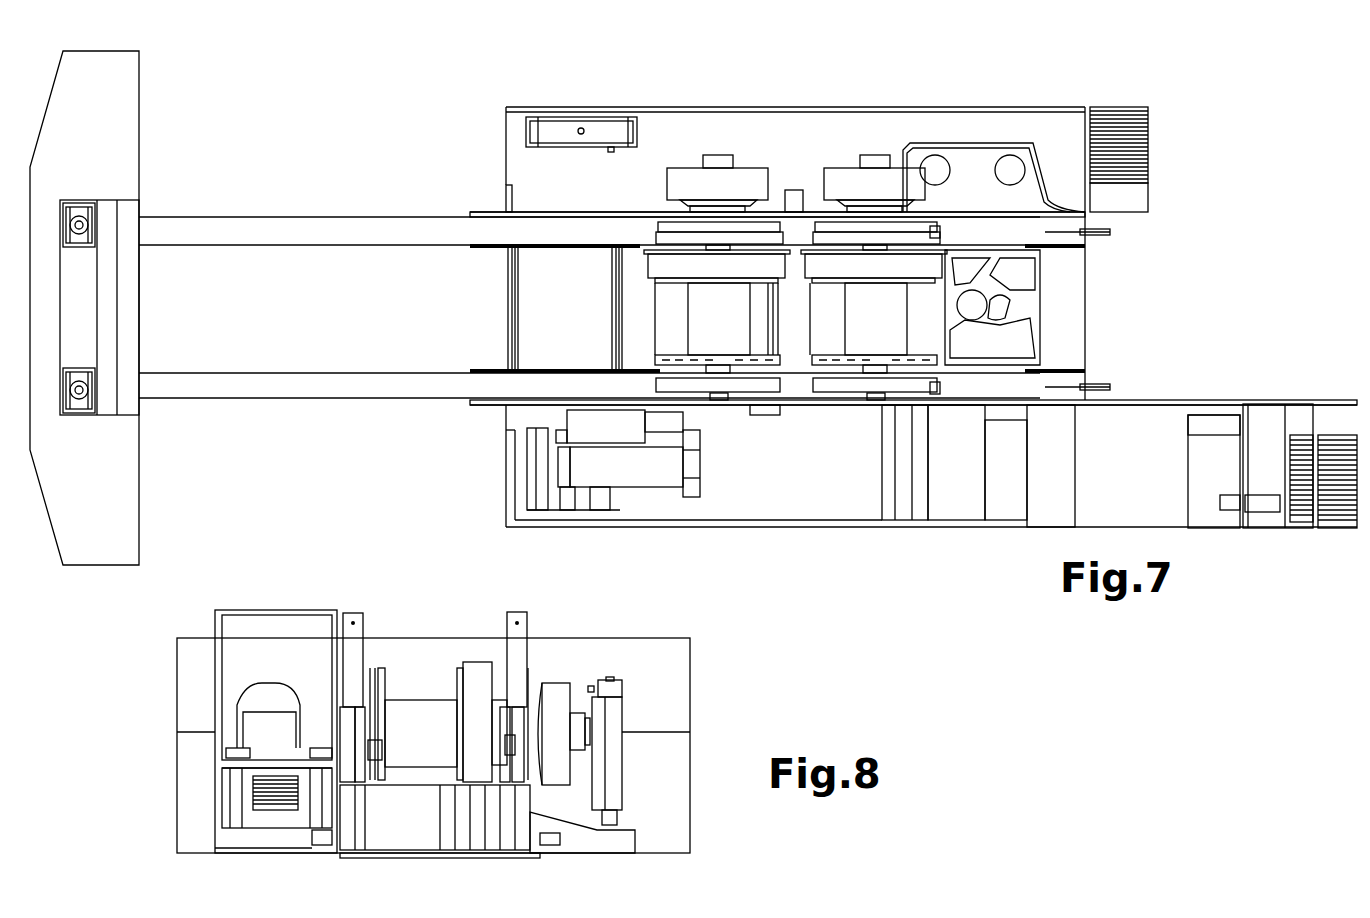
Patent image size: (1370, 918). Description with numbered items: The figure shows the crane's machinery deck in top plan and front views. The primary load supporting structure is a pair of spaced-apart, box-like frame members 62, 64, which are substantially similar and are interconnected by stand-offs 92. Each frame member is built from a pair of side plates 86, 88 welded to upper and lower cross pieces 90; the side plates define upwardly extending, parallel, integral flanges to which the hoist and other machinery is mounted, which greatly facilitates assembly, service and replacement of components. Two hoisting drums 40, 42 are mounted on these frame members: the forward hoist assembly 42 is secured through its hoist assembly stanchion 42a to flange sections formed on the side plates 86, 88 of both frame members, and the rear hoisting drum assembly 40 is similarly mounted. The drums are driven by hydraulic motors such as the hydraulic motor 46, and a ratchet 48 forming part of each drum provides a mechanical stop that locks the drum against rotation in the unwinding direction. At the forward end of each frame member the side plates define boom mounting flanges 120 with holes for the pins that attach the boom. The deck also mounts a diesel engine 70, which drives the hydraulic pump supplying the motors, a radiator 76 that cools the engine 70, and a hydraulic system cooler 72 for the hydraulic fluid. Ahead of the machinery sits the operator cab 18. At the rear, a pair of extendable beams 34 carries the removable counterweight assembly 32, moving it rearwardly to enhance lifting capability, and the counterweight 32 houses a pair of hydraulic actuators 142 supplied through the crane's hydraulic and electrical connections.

In FIG. 7, the operator cab 18 is at (1247, 385).
In FIG. 8, the operator cab 18 is at (258, 600).
In FIG. 7, the counterweight assembly 32 is at (125, 95).
In FIG. 8, the counterweight assembly 32 is at (678, 688).
In FIG. 7, the extendable beams 34 is at (285, 232).
In FIG. 7, the rear hoisting drum assembly 40 is at (710, 125).
In FIG. 7, the forward hoist assembly 42 is at (862, 130).
In FIG. 8, the forward hoist assembly 42 is at (422, 670).
In FIG. 7, the hoist assembly stanchion 42a is at (940, 235).
In FIG. 8, the hoist assembly stanchion 42a is at (380, 757).
In FIG. 8, the hydraulic motor 46 is at (557, 693).
In FIG. 7, the ratchet 48 is at (660, 358).
In FIG. 8, the ratchet 48 is at (378, 680).
In FIG. 7, the frame member 62 is at (537, 365).
In FIG. 7, the frame member 64 is at (555, 205).
In FIG. 7, the diesel engine 70 is at (648, 472).
In FIG. 7, the hydraulic system cooler 72 is at (963, 495).
In FIG. 7, the radiator 76 is at (558, 130).
In FIG. 8, the radiator 76 is at (618, 757).
In FIG. 7, the side plate 86 is at (760, 405).
In FIG. 7, the side plate 88 is at (793, 240).
In FIG. 7, the cross piece 90 is at (636, 241).
In FIG. 7, the stand-offs 92 is at (612, 272).
In FIG. 7, the boom mounting flange 120 is at (1110, 232).
In FIG. 7, the hydraulic actuators 142 is at (85, 235).